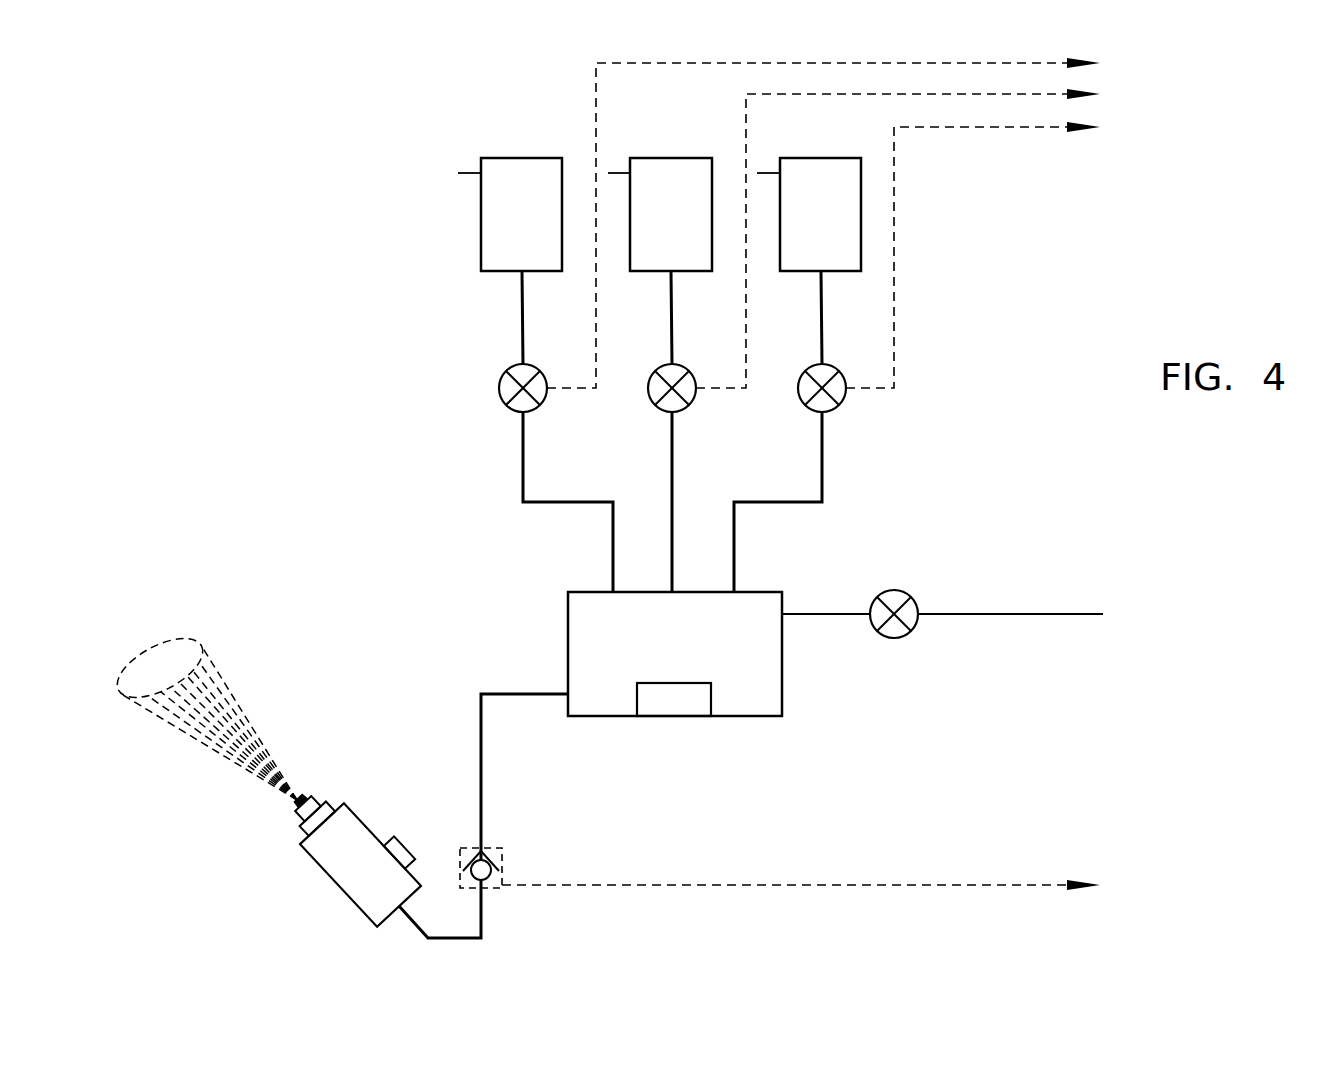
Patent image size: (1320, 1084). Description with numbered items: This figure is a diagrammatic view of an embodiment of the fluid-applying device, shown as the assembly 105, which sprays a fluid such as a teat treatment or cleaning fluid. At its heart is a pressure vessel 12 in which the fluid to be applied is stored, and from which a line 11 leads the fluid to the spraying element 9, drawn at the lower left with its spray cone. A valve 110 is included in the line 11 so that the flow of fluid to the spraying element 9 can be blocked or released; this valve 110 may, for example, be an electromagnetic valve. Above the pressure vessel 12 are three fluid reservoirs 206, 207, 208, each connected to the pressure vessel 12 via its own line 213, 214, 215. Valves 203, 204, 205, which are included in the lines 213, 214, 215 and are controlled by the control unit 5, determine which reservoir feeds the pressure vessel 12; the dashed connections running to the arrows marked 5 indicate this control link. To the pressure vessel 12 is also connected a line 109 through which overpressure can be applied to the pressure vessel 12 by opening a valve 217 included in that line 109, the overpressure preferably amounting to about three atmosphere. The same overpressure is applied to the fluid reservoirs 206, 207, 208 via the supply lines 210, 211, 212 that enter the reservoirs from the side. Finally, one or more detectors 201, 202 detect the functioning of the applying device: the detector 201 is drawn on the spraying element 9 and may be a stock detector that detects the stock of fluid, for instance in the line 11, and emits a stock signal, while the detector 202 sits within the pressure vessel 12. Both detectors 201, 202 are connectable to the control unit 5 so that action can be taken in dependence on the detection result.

The control unit 5 is at (1136, 109).
The spraying element 9 is at (358, 875).
The line 11 is at (481, 730).
The pressure vessel 12 is at (755, 686).
The spray system 105 is at (289, 770).
The line 109 is at (1103, 614).
The valve 110 is at (500, 852).
The detector 201 is at (398, 849).
The detector 202 is at (674, 700).
The valve 203 is at (500, 388).
The valve 204 is at (648, 388).
The valve 205 is at (798, 388).
The fluid reservoir 206 is at (522, 158).
The fluid reservoir 207 is at (670, 158).
The fluid reservoir 208 is at (820, 158).
The supply line 210 is at (458, 173).
The supply line 211 is at (657, 122).
The supply line 212 is at (807, 122).
The line 213 is at (569, 502).
The line 214 is at (673, 554).
The line 215 is at (780, 502).
The valve 217 is at (893, 590).